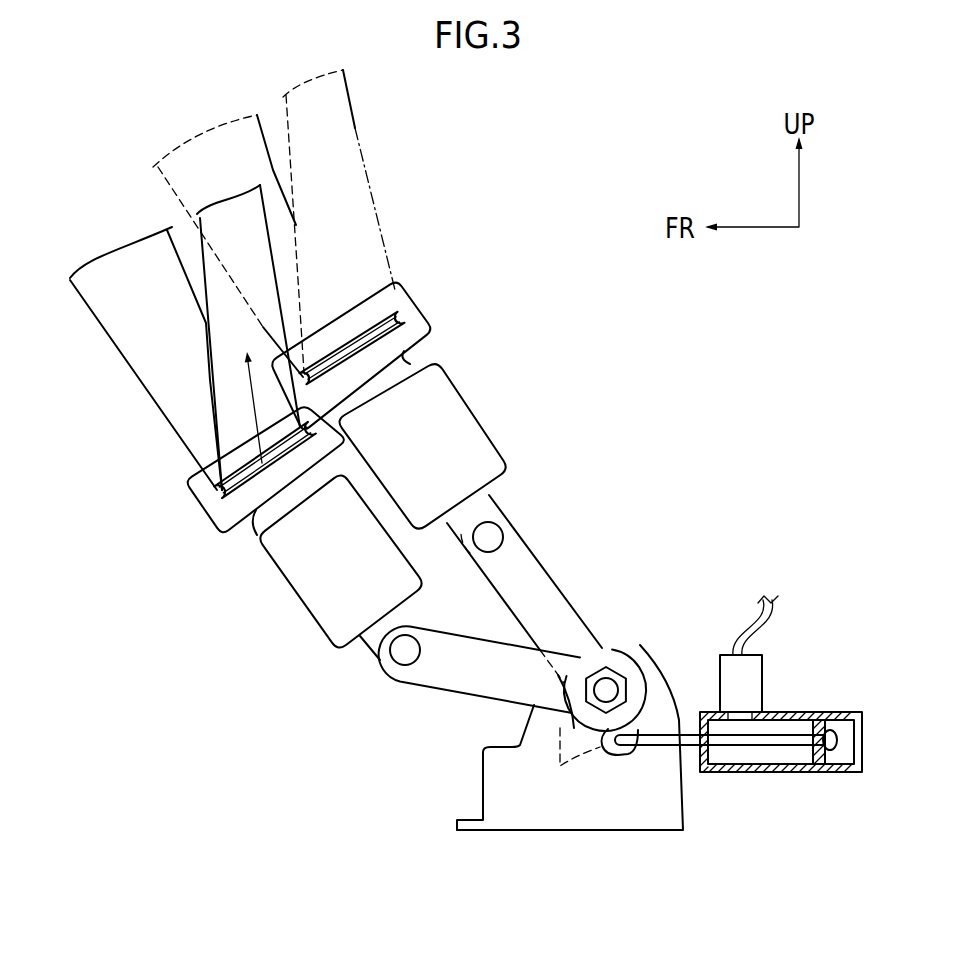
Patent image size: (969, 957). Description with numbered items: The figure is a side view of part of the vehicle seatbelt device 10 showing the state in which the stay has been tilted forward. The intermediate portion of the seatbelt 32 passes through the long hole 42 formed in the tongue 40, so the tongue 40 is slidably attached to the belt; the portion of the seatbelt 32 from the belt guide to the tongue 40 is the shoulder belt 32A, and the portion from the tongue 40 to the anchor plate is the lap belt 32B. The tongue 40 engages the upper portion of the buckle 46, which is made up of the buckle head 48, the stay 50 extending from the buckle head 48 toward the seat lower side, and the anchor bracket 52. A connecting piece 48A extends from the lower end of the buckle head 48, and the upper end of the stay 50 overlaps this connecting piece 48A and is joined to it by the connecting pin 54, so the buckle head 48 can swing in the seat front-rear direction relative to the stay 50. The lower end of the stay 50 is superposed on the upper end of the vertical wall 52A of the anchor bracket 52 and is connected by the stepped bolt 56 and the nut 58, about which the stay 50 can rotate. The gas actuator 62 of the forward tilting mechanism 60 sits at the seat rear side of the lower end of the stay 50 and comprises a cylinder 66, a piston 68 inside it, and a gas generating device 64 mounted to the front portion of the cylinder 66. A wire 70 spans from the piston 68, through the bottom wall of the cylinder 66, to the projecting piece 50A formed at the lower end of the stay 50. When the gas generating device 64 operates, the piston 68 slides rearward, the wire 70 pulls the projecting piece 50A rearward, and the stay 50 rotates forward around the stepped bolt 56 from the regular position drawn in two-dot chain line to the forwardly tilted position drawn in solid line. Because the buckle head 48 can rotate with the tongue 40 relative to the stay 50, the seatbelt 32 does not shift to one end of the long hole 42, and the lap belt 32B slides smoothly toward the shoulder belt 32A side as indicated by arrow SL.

The vehicle seatbelt device 10 is at (648, 418).
The seatbelt 32 is at (355, 128).
The shoulder belt 32A is at (368, 194).
The lap belt 32B is at (178, 197).
The arrow SL is at (206, 373).
The tongue 40 is at (420, 298).
The long hole 42 is at (360, 342).
The buckle 46 is at (419, 561).
The buckle head 48 is at (476, 417).
The connecting piece 48A is at (510, 507).
The stay 50 is at (566, 598).
The projecting piece 50A is at (607, 748).
The anchor bracket 52 is at (528, 835).
The vertical wall 52A is at (580, 812).
The connecting pin 54 is at (495, 532).
The stepped bolt 56 is at (608, 692).
The nut 58 is at (612, 655).
The forward tilting mechanism 60 is at (788, 762).
The gas actuator 62 is at (788, 762).
The gas generating device 64 is at (767, 682).
The cylinder 66 is at (830, 710).
The piston 68 is at (812, 752).
The wire 70 is at (656, 747).